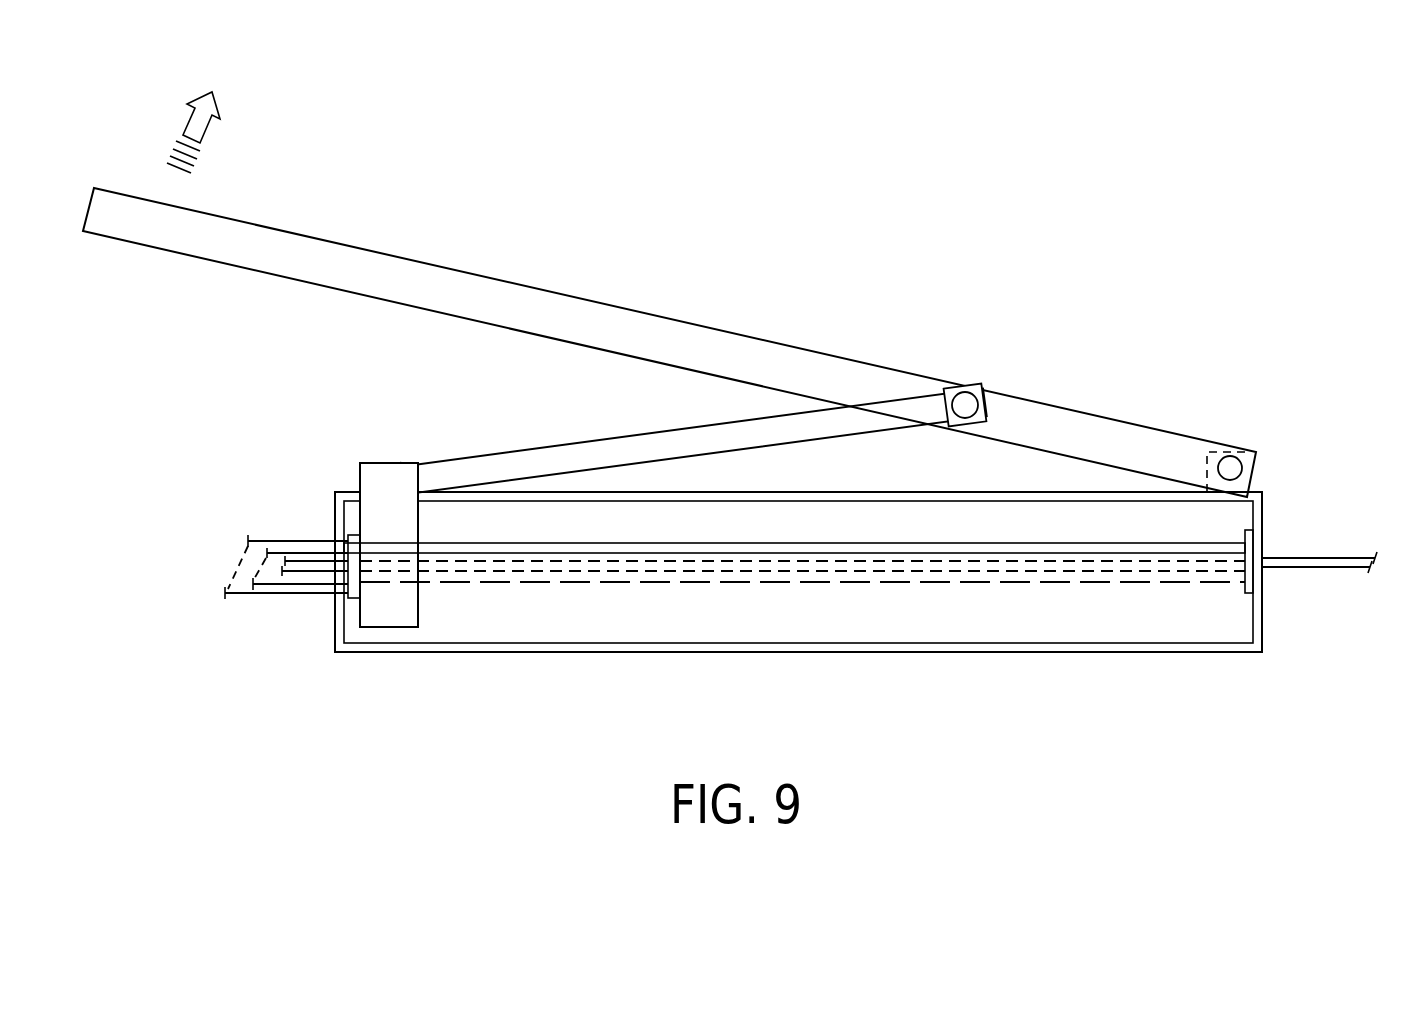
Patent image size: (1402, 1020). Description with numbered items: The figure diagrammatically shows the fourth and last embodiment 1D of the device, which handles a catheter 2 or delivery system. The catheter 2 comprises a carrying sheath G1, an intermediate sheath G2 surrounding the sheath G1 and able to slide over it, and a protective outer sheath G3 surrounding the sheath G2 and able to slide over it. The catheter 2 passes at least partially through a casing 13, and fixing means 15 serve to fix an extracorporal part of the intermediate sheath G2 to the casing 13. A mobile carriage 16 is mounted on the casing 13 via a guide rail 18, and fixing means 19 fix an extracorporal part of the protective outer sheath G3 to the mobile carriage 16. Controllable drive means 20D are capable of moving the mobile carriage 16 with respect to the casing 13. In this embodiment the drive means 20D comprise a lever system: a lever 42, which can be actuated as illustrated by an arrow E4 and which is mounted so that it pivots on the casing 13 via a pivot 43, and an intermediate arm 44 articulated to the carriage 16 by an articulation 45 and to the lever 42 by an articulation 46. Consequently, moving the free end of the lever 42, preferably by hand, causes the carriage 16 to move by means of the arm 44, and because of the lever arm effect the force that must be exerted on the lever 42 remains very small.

The fourth embodiment 1D is at (767, 240).
The catheter 2 is at (325, 530).
The casing 13 is at (853, 653).
The fixing means 15 is at (1243, 606).
The mobile carriage 16 is at (388, 627).
The guide rail 18 is at (848, 541).
The fixing means 19 is at (353, 606).
The controllable drive means 20D is at (926, 350).
The lever 42 is at (397, 257).
The pivot 43 is at (1235, 457).
The intermediate arm 44 is at (550, 446).
The articulation 45 is at (387, 470).
The articulation 46 is at (968, 392).
The arrow E4 is at (203, 148).
The carrying sheath G1 is at (1315, 570).
The intermediate sheath G2 is at (615, 585).
The protective outer sheath G3 is at (262, 597).